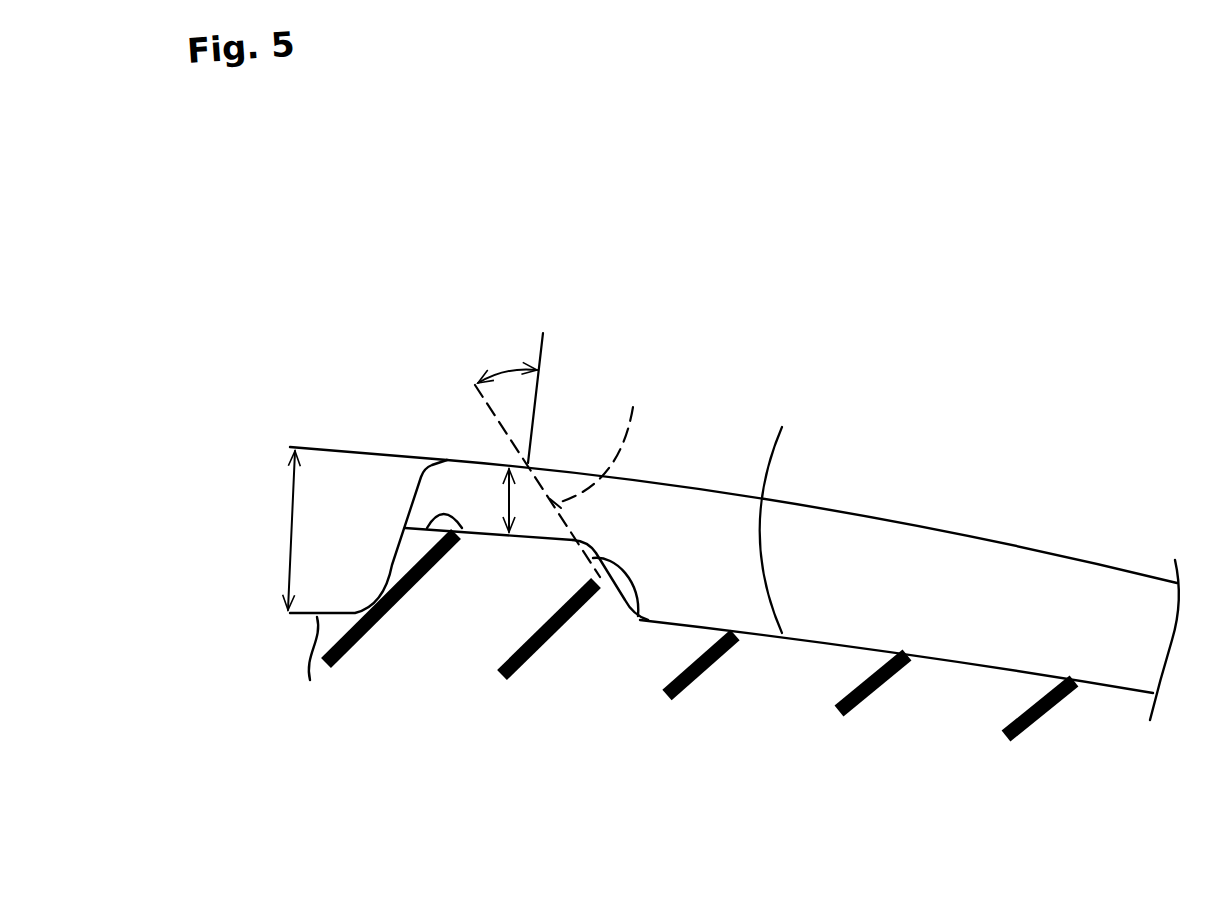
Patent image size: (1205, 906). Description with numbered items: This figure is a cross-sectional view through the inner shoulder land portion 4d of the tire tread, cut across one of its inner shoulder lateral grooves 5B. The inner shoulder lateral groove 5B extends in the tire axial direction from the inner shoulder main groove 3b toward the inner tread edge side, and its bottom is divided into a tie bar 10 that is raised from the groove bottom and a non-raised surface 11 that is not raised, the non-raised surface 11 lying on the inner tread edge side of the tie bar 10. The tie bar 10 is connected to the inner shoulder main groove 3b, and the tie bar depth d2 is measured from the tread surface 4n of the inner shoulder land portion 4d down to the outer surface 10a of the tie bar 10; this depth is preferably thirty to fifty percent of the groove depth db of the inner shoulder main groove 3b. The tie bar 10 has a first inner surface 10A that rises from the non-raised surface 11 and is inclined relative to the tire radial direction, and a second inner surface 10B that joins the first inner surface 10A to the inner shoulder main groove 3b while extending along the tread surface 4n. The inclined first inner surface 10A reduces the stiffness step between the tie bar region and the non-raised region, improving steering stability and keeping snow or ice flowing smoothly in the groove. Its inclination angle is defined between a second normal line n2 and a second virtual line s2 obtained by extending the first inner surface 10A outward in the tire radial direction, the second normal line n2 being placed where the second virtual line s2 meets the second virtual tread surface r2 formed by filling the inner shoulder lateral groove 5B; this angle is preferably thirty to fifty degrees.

The tread surface 4n is at (685, 483).
The inner shoulder land portion 4d is at (853, 402).
The inner shoulder lateral groove 5B is at (1087, 547).
The tie bar 10 is at (482, 530).
The first inner surface 10A is at (640, 618).
The outer surface 10a is at (417, 643).
The second inner surface 10B is at (462, 536).
The non-raised surface 11 is at (780, 515).
The inner shoulder main groove 3b is at (321, 552).
The second virtual tread surface r2 is at (925, 517).
The groove depth db is at (267, 530).
The tie bar depth d2 is at (510, 500).
The second normal line n2 is at (543, 352).
The second virtual line s2 is at (603, 440).